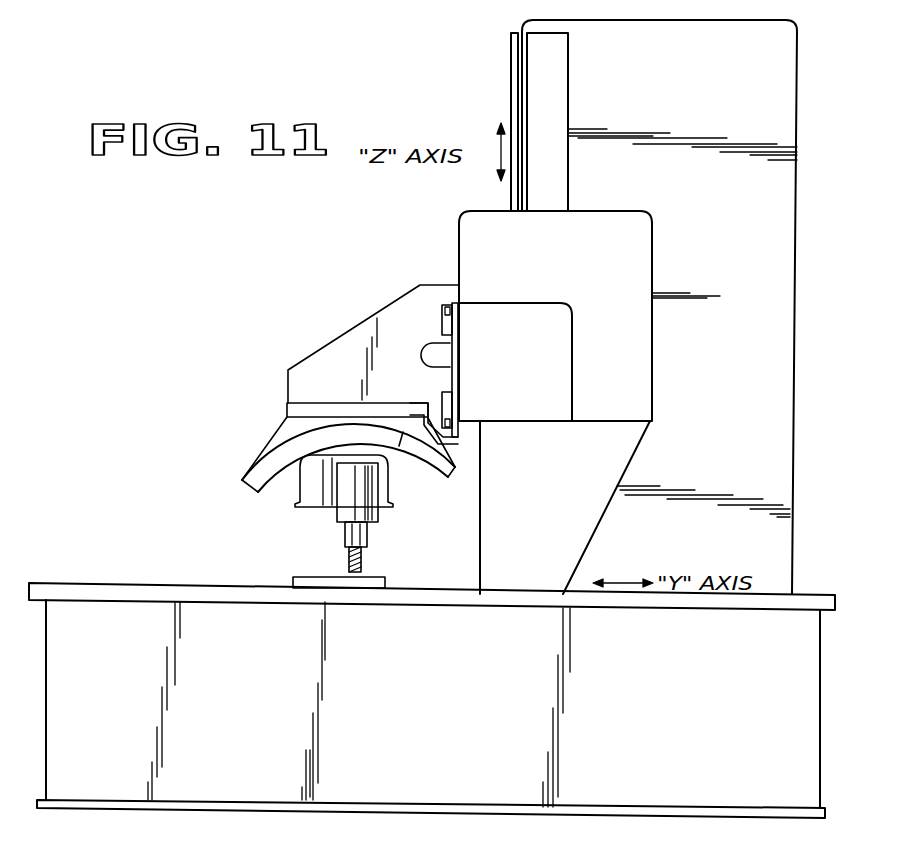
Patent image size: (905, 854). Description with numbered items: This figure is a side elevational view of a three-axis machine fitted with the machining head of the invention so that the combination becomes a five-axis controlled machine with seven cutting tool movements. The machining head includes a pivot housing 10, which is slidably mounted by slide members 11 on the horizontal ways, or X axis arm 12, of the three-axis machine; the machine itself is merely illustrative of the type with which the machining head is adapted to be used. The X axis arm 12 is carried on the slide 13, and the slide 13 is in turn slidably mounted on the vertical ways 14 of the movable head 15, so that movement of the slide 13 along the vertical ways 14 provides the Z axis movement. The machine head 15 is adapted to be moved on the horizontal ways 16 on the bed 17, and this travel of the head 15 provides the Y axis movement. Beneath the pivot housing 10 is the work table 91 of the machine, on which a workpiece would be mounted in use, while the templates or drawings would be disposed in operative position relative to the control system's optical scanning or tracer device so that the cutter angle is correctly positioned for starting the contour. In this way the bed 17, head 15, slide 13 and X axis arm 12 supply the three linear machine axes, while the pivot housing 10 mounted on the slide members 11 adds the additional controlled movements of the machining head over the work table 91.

The pivot housing 10 is at (330, 330).
The slide members 11 is at (458, 305).
The X axis arm 12 is at (442, 322).
The slide 13 is at (452, 220).
The vertical ways 14 is at (511, 80).
The movable head 15 is at (798, 21).
The horizontal ways 16 is at (425, 587).
The bed 17 is at (438, 787).
The work table 91 is at (307, 577).